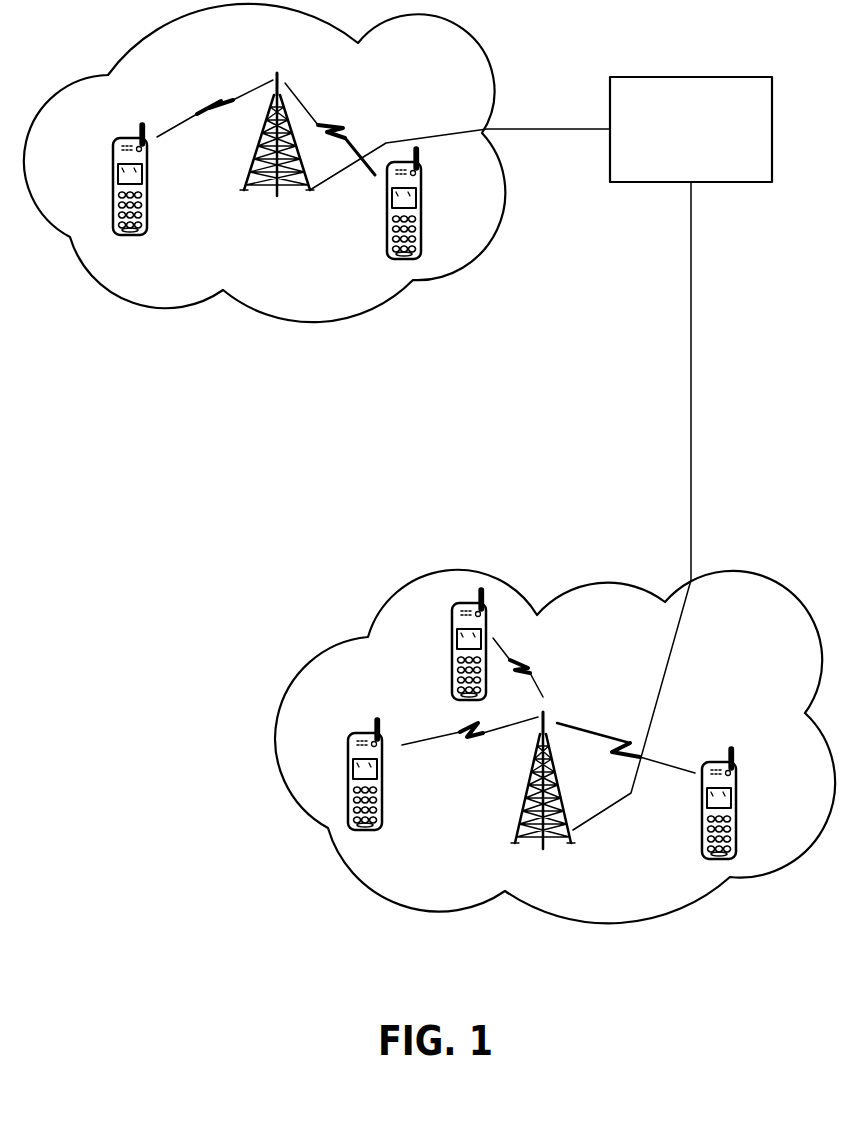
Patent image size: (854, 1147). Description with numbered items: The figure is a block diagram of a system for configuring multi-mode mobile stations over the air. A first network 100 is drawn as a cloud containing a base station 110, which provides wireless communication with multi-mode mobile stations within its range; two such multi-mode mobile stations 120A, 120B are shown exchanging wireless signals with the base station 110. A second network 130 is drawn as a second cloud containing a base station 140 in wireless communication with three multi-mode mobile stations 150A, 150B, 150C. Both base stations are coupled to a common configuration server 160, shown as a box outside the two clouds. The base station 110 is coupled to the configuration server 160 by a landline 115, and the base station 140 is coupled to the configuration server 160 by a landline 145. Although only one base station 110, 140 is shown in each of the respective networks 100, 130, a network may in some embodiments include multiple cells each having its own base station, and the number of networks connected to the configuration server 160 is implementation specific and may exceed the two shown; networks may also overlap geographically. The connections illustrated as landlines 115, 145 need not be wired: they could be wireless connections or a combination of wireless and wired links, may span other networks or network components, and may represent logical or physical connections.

The first network 100 is at (453, 69).
The base station 110 is at (252, 167).
The multi-mode mobile station 120A is at (148, 212).
The multi-mode mobile station 120B is at (386, 233).
The landline 115 is at (557, 130).
The configuration server 160 is at (710, 172).
The landline 145 is at (691, 422).
The second network 130 is at (745, 647).
The base station 140 is at (530, 786).
The multi-mode mobile station 150A is at (452, 658).
The multi-mode mobile station 150B is at (383, 808).
The multi-mode mobile station 150C is at (702, 838).